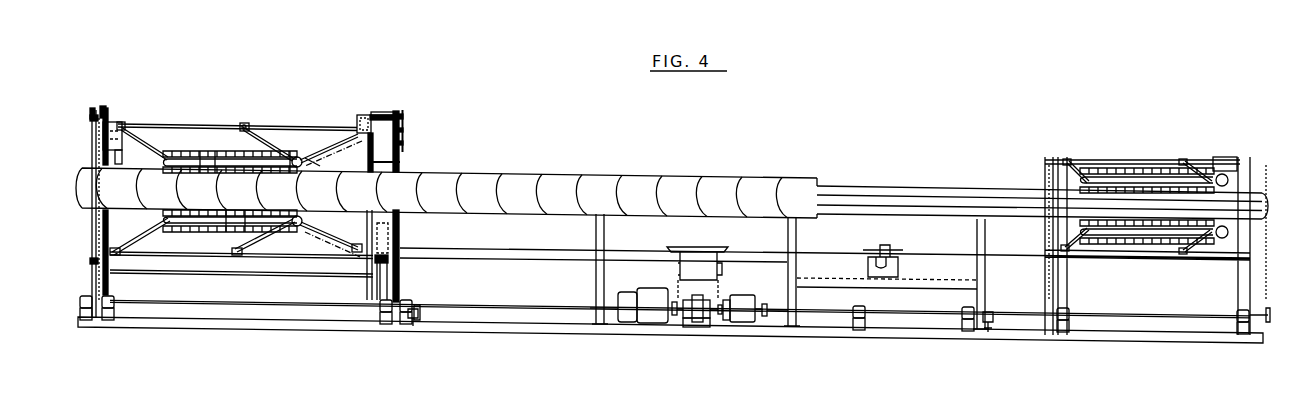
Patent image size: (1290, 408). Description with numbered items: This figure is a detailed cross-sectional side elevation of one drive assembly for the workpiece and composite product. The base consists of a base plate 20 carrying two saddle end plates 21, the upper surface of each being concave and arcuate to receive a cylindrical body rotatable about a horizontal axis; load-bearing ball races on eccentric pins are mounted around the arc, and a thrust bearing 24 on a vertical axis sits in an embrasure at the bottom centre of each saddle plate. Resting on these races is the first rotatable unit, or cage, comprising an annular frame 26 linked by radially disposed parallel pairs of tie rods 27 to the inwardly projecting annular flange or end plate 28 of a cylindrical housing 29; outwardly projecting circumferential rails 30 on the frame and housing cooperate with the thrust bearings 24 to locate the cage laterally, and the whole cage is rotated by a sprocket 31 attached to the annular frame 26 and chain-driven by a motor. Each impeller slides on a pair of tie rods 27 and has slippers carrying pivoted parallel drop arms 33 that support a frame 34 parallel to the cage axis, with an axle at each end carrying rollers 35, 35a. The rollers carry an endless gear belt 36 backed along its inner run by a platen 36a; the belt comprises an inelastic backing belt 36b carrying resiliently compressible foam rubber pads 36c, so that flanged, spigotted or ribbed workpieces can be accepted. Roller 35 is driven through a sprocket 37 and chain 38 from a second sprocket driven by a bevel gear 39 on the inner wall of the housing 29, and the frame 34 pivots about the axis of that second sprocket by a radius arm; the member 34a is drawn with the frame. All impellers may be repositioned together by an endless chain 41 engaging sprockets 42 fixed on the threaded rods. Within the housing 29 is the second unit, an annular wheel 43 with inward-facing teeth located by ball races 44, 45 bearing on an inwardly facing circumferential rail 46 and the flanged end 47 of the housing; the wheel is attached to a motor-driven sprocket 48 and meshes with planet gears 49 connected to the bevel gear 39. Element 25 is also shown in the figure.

The base plate 20 is at (170, 326).
The saddle end plates 21 is at (108, 283).
The thrust bearing 24 is at (112, 265).
The guide member 25 is at (98, 165).
The annular frame 26 is at (108, 116).
The tie rods 27 is at (330, 125).
The annular flange or end plate 28 is at (363, 118).
The cylindrical housing 29 is at (374, 113).
The circumferential rails 30 is at (105, 108).
The sprocket 31 is at (93, 223).
The drop arms 33 is at (247, 126).
The frame 34 is at (207, 155).
The arm 34a is at (322, 148).
The roller 35 is at (290, 152).
The roller 35a is at (178, 155).
The endless gear belt 36 is at (186, 155).
The platen 36a is at (200, 155).
The backing belt 36b is at (226, 230).
The foam rubber pads 36c is at (215, 157).
The sprocket 37 is at (244, 125).
The chain 38 is at (308, 152).
The bevel gear 39 is at (380, 243).
The endless chain 41 is at (96, 142).
The sprockets 42 is at (93, 119).
The annular wheel 43 is at (400, 162).
The ball races 44 is at (378, 117).
The ball races 45 is at (401, 112).
The circumferential rail 46 is at (366, 118).
The flanged end 47 is at (401, 117).
The sprocket 48 is at (401, 130).
The planet gears 49 is at (403, 143).